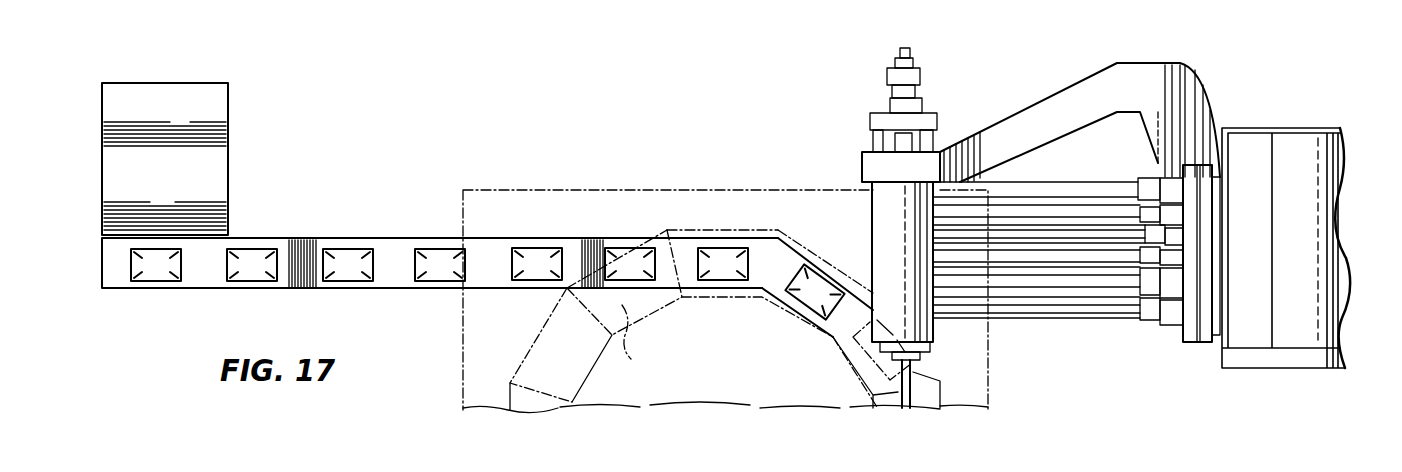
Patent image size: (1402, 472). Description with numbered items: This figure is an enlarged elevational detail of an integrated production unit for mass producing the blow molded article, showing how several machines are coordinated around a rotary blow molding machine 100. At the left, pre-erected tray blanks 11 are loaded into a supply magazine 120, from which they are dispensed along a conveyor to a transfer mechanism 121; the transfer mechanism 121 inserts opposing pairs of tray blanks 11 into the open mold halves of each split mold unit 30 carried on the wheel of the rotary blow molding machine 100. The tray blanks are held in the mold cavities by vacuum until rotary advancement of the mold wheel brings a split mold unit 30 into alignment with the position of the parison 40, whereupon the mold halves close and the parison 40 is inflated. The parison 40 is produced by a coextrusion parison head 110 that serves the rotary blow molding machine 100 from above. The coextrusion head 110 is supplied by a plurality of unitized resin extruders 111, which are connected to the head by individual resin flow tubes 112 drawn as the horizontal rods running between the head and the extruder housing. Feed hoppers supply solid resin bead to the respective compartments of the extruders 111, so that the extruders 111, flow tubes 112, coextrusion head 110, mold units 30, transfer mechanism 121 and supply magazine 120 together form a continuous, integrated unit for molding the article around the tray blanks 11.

The tray blanks 11 is at (415, 258).
The split mold unit 30 is at (573, 370).
The parison 40 is at (927, 373).
The rotary blow molding machine 100 is at (781, 385).
The coextrusion parison head 110 is at (893, 228).
The unitized resin extruders 111 is at (1318, 160).
The resin flow tubes 112 is at (1065, 278).
The supply magazine 120 is at (104, 214).
The transfer mechanism 121 is at (314, 212).